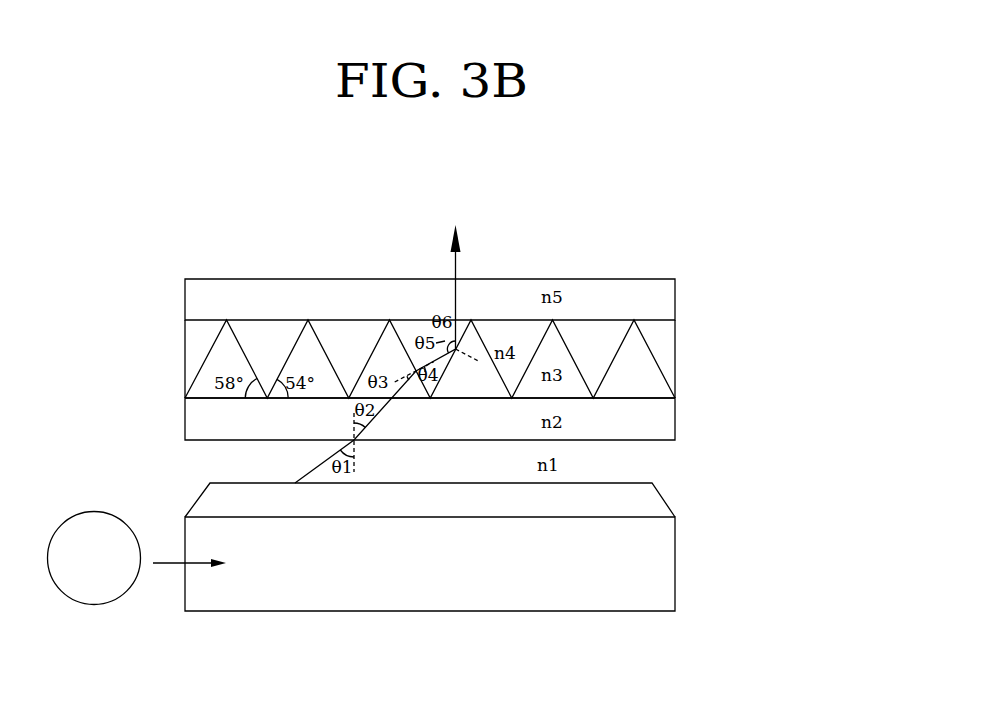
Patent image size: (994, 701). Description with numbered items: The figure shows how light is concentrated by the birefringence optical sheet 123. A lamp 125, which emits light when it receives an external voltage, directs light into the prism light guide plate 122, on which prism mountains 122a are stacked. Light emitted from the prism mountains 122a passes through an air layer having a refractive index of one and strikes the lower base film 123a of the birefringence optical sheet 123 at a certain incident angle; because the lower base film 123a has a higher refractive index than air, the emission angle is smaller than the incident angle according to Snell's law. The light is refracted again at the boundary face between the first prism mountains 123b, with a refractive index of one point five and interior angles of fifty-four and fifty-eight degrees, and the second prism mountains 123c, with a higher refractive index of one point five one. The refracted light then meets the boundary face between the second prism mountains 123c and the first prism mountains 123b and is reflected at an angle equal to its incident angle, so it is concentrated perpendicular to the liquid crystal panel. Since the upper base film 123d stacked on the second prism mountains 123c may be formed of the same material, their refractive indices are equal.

The prism light guide plate 122 is at (484, 547).
The prism mountains 122a is at (652, 503).
The birefringence optical sheet 123 is at (507, 358).
The lower base film 123a is at (482, 419).
The first prism mountains 123b is at (653, 376).
The second prism mountains 123c is at (653, 339).
The upper base film 123d is at (653, 297).
The lamp 125 is at (83, 530).